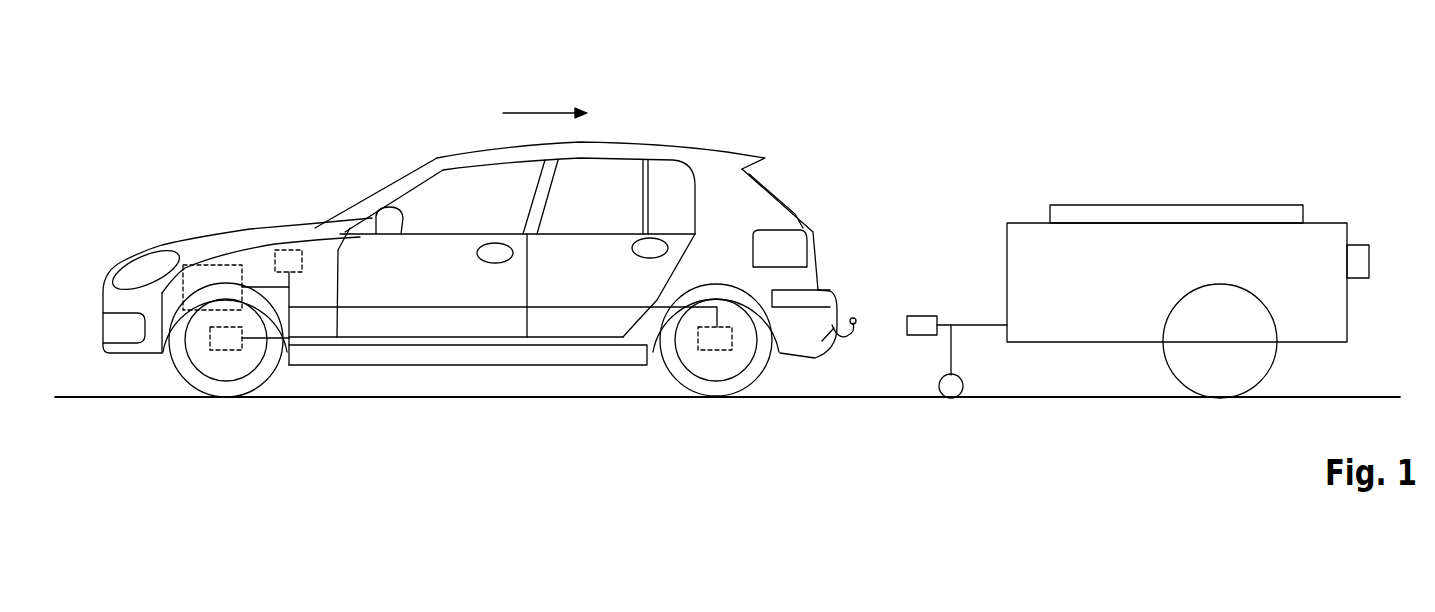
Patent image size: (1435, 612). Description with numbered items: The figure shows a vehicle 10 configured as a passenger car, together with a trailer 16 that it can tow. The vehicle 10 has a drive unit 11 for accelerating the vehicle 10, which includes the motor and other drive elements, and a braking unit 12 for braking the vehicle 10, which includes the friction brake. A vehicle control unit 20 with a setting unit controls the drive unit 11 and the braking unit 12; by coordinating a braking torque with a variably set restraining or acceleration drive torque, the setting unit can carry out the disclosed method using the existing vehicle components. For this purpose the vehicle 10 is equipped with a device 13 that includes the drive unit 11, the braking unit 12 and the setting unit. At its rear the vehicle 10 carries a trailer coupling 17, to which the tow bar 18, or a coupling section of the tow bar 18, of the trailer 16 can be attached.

The vehicle 10 is at (702, 124).
The drive unit 11 is at (197, 266).
The braking unit 12 is at (228, 346).
The device 13 is at (174, 228).
The trailer 16 is at (1188, 184).
The trailer coupling 17 is at (854, 318).
The tow bar 18 is at (918, 315).
The vehicle control unit 20 is at (286, 250).